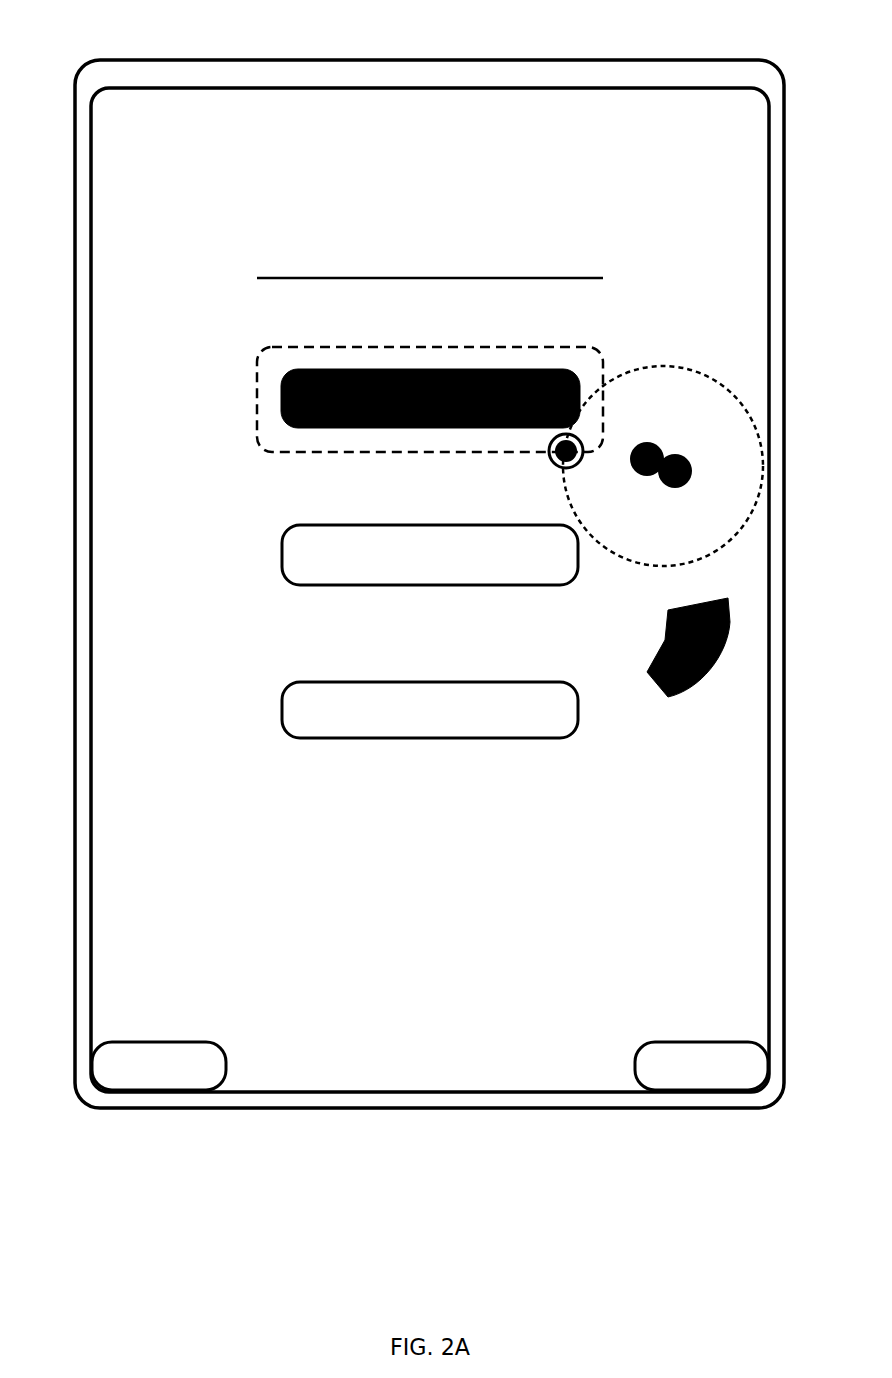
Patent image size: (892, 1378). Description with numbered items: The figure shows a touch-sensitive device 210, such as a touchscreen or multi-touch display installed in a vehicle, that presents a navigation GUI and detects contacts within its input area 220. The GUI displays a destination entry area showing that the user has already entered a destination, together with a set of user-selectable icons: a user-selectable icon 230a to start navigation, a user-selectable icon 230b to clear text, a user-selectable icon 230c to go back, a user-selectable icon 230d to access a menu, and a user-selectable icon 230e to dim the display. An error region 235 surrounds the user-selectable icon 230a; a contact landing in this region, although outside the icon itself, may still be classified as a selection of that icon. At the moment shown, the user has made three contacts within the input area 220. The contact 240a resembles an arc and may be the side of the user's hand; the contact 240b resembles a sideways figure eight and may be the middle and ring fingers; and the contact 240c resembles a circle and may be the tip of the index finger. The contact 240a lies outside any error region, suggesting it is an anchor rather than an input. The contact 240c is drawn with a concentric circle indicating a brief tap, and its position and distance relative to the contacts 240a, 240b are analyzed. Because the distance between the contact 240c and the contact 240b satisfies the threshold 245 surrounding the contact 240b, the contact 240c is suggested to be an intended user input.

The touch-sensitive device 210 is at (710, 60).
The input area 220 is at (187, 190).
The error region 235 is at (593, 348).
The user-selectable icon 230a is at (328, 369).
The user-selectable icon 230b is at (327, 525).
The user-selectable icon 230c is at (323, 682).
The user-selectable icon 230d is at (132, 1042).
The user-selectable icon 230e is at (672, 1042).
The threshold 245 is at (693, 370).
The contact 240b is at (635, 447).
The contact 240c is at (552, 459).
The contact 240a is at (655, 692).